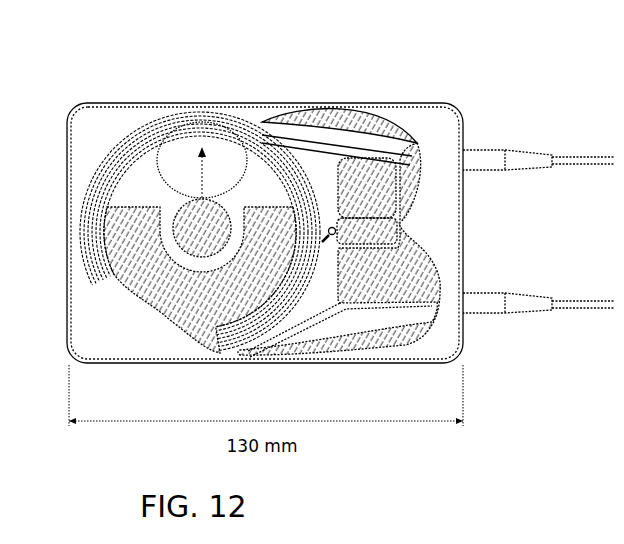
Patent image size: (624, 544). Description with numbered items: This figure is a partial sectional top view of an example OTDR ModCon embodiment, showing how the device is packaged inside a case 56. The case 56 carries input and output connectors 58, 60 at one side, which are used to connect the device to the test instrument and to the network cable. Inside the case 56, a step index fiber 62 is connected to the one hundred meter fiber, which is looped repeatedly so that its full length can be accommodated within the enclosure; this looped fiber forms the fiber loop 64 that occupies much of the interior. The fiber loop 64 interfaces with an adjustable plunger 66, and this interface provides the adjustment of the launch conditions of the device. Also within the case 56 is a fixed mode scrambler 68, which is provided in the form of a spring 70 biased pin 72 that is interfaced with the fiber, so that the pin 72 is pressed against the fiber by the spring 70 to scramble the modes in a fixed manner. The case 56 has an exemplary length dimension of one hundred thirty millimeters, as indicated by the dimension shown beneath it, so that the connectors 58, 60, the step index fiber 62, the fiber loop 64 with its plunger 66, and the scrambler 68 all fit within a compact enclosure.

The case 56 is at (72, 302).
The input connector 58 is at (495, 303).
The output connector 60 is at (487, 150).
The step index fiber 62 is at (339, 311).
The fiber loop 64 is at (238, 162).
The adjustable plunger 66 is at (185, 215).
The fixed mode scrambler 68 is at (355, 230).
The spring 70 is at (397, 222).
The pin 72 is at (328, 236).